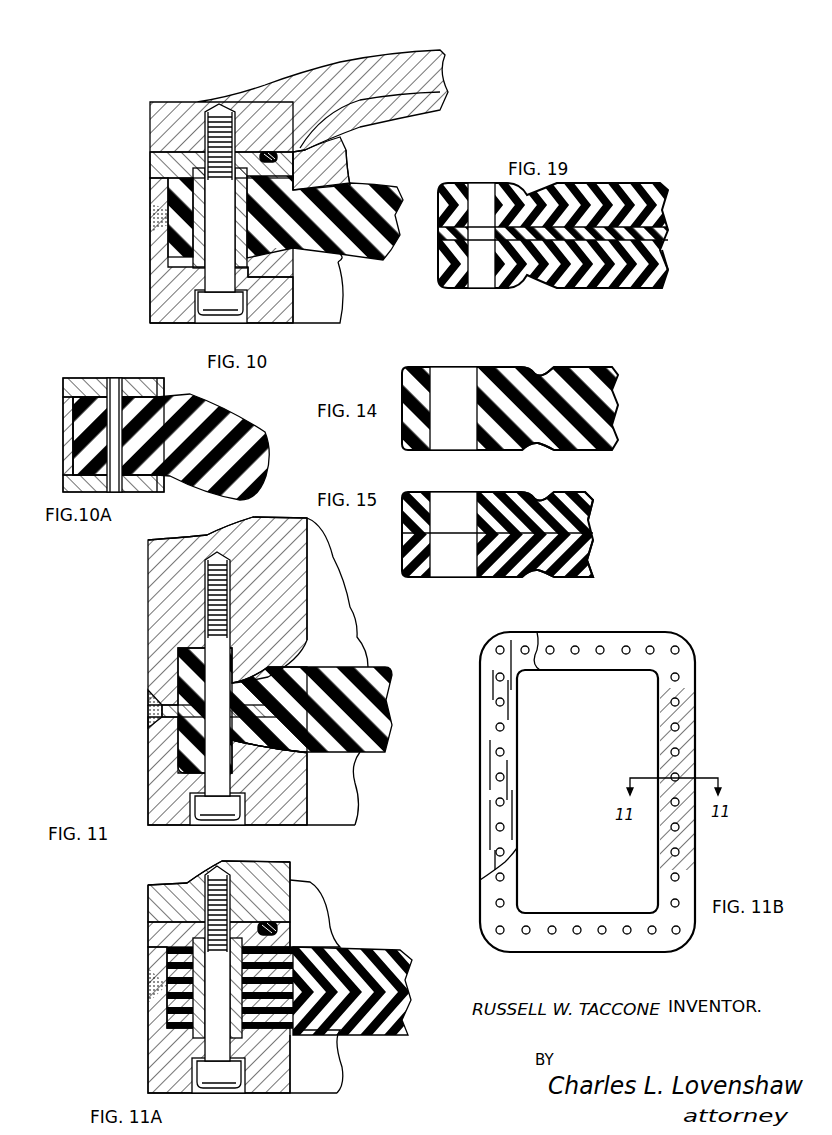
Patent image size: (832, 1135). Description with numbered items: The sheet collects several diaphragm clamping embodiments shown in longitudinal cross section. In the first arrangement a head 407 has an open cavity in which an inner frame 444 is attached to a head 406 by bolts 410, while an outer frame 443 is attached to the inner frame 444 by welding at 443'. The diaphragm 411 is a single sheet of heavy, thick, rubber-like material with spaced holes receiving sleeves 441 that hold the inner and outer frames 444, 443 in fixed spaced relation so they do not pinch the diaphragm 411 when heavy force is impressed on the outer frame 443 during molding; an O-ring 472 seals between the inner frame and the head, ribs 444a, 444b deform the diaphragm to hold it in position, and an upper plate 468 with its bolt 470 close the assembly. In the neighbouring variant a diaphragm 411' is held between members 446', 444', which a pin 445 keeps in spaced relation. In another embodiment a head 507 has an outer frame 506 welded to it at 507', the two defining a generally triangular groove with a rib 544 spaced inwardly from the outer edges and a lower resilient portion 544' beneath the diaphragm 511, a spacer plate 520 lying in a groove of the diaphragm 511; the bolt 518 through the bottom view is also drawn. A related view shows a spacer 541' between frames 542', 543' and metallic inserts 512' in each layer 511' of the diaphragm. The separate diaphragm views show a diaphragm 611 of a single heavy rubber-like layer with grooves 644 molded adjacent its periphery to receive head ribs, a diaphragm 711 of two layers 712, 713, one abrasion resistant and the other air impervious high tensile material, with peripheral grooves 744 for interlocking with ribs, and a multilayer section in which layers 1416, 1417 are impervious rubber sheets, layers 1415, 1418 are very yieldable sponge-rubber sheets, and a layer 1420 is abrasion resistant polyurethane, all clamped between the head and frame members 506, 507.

In FIG. 10, the head 406 is at (152, 292).
In FIG. 10, the head 407 is at (160, 125).
In FIG. 10, the bolts 410 is at (228, 280).
In FIG. 10, the diaphragm 411 is at (348, 198).
In FIG. 10, the sleeves 441 is at (165, 192).
In FIG. 10, the outer frame 443 is at (132, 239).
In FIG. 10, the weld 443' is at (120, 227).
In FIG. 10, the inner frame 444 is at (195, 168).
In FIG. 10, the rib 444a is at (290, 252).
In FIG. 10, the rib 444b is at (297, 177).
In FIG. 10, the upper plate 468 is at (300, 66).
In FIG. 10, the bolt 470 is at (223, 107).
In FIG. 10, the O-ring 472 is at (318, 103).
In FIG. 10A, the diaphragm 411' is at (185, 443).
In FIG. 10A, the member 444' is at (123, 373).
In FIG. 10A, the pin 445 is at (145, 483).
In FIG. 10A, the member 446' is at (137, 492).
In FIG. 19, the layer 1415 is at (666, 208).
In FIG. 19, the layer 1416 is at (623, 190).
In FIG. 19, the layer 1417 is at (666, 235).
In FIG. 19, the layer 1418 is at (668, 262).
In FIG. 19, the layer 1420 is at (662, 284).
In FIG. 14, the diaphragm 611 is at (572, 372).
In FIG. 14, the grooves 644 is at (532, 372).
In FIG. 15, the diaphragm 711 is at (580, 500).
In FIG. 15, the layer 712 is at (590, 515).
In FIG. 15, the layer 713 is at (588, 555).
In FIG. 15, the peripheral groove 744 is at (528, 500).
In FIG. 11, the outer frame 506 is at (152, 783).
In FIG. 11B, the outer frame 506 is at (575, 665).
In FIG. 11, the head 507 is at (186, 611).
In FIG. 11, the weld 507' is at (172, 716).
In FIG. 11, the diaphragm 511 is at (336, 671).
In FIG. 11, the bolt 518 is at (203, 596).
In FIG. 11B, the bolt 518 is at (504, 727).
In FIG. 11, the spacer plate 520 is at (160, 722).
In FIG. 11B, the spacer plate 520 is at (488, 796).
In FIG. 11, the rib 544 is at (295, 701).
In FIG. 11, the lower resilient body 544' is at (325, 761).
In FIG. 11A, the layer 511' is at (380, 977).
In FIG. 11A, the metallic inserts 512' is at (190, 993).
In FIG. 11A, the spacer 541' is at (302, 933).
In FIG. 11A, the frame 542' is at (188, 912).
In FIG. 11A, the frame 543' is at (200, 989).